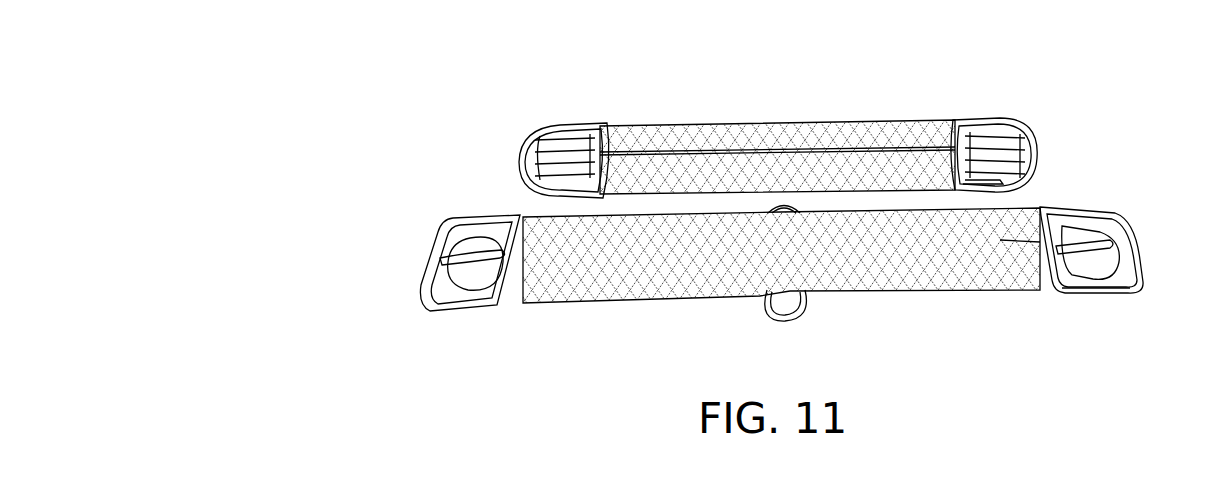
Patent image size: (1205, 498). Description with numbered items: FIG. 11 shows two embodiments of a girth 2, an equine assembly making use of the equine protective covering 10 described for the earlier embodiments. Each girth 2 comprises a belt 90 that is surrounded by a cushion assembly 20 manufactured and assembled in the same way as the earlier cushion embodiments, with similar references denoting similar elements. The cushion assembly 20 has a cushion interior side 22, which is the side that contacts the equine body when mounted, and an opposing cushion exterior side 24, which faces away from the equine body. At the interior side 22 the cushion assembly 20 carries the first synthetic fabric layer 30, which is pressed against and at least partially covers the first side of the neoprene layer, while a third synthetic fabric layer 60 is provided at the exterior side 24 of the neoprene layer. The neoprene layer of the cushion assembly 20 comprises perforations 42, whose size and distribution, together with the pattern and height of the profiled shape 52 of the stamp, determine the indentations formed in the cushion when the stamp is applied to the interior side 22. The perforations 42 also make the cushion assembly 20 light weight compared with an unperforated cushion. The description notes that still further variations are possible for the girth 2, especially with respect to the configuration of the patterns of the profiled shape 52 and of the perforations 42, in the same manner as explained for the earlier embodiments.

The girth 2 is at (460, 143).
The equine protective covering 10 is at (596, 94).
The cushion assembly 20 is at (680, 125).
The cushion interior side 22 is at (840, 128).
The cushion exterior side 24 is at (1000, 176).
The first synthetic fabric layer 30 is at (727, 135).
The perforations 42 is at (903, 127).
The profiled shape 52 is at (778, 147).
The third synthetic fabric layer 60 is at (985, 180).
The belt 90 is at (596, 168).